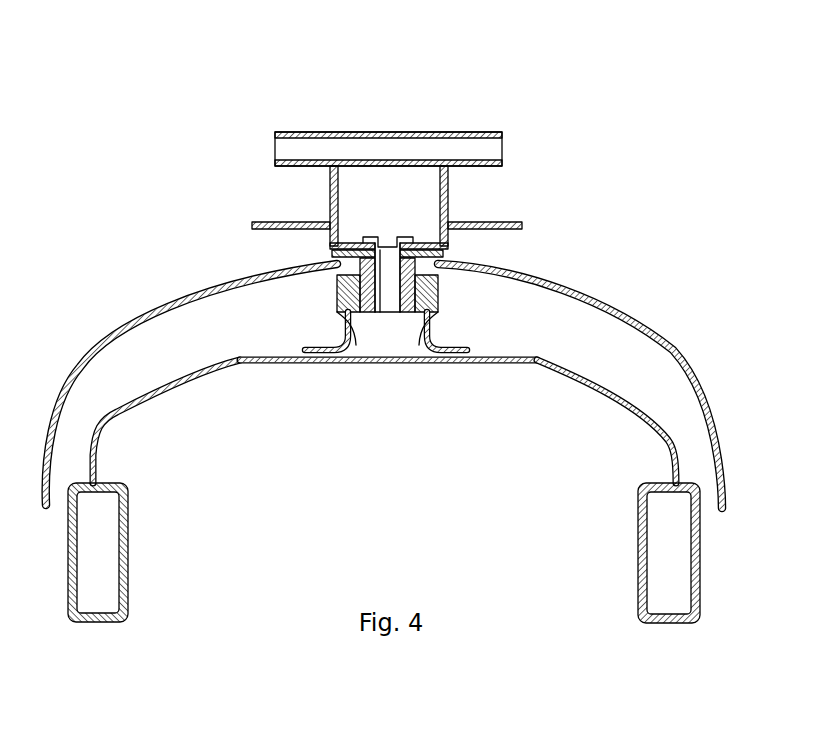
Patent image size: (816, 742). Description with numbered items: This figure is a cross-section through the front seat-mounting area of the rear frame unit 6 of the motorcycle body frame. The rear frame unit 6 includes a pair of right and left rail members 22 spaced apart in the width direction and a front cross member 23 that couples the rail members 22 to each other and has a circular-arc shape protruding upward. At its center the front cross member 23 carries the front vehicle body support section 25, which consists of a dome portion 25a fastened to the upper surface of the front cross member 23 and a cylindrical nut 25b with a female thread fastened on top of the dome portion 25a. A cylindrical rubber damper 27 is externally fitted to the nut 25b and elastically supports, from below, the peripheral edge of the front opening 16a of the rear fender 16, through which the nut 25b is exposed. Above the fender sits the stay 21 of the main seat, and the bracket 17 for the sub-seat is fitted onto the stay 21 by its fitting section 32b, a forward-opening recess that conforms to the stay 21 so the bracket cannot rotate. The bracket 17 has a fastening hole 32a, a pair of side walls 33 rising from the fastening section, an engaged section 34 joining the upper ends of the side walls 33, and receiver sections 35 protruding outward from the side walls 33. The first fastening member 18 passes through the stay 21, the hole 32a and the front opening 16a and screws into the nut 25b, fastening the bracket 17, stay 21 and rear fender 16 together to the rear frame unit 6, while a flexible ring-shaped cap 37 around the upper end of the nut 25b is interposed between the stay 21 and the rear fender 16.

The rear frame unit 6 is at (676, 441).
The rear fender 16 is at (118, 322).
The front opening 16a is at (324, 262).
The bracket 17 is at (401, 168).
The first fastening member 18 is at (386, 320).
The stay 21 is at (369, 243).
The rail members 22 is at (128, 558).
The front cross member 23 is at (112, 410).
The front vehicle body support section 25 is at (334, 385).
The dome portion 25a is at (418, 340).
The nut 25b is at (355, 320).
The rubber damper 27 is at (440, 300).
The fastening hole 32a is at (387, 243).
The fitting section 32b is at (448, 213).
The side walls 33 is at (342, 187).
The engaged section 34 is at (492, 130).
The receiver sections 35 is at (252, 225).
The cap 37 is at (468, 263).